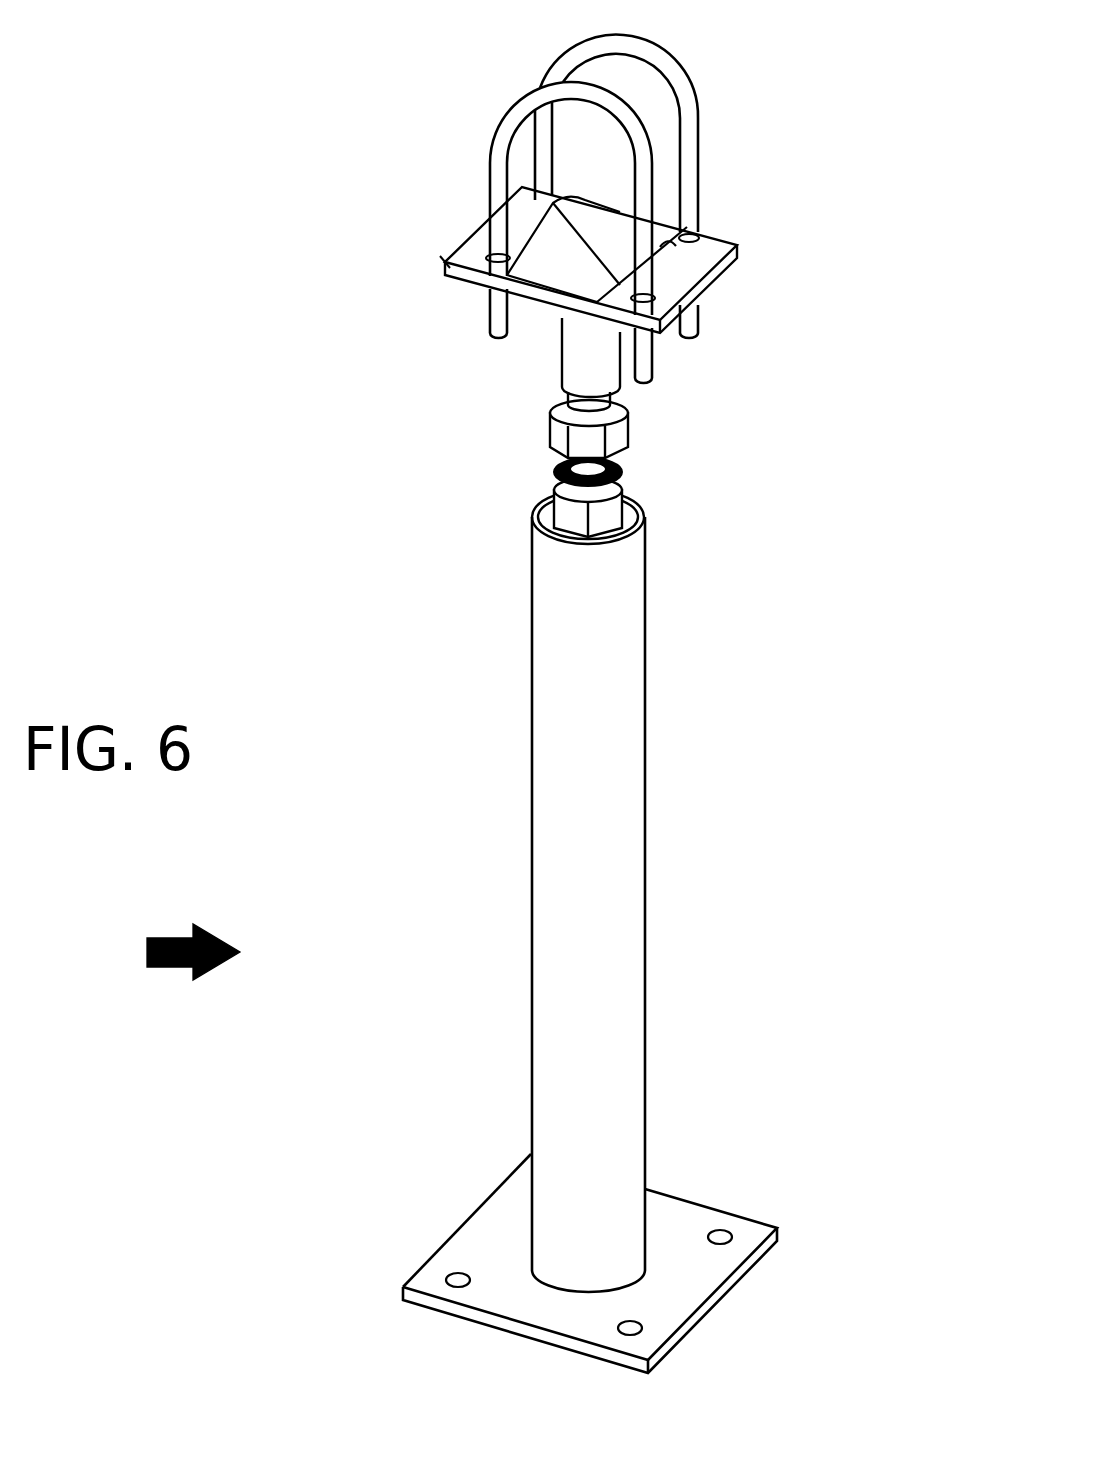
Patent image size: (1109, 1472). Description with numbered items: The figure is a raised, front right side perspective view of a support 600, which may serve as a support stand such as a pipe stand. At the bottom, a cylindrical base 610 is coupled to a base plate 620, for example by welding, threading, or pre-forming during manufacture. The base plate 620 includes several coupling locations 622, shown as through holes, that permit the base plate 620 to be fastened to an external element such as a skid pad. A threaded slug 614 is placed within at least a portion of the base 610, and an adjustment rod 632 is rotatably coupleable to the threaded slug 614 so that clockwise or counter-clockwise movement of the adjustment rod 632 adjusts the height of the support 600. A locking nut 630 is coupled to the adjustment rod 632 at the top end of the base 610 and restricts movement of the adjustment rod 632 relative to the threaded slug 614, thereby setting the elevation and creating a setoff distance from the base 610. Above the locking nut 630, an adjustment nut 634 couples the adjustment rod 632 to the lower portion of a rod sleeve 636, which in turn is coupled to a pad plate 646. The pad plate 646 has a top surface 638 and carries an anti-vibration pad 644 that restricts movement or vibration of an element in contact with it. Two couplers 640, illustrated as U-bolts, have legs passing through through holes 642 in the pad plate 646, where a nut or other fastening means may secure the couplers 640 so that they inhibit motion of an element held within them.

The support 600 is at (160, 952).
The base 610 is at (598, 692).
The threaded slug 614 is at (645, 533).
The base plate 620 is at (678, 1235).
The coupling location 622 is at (455, 1280).
The locking nut 630 is at (603, 508).
The adjustment rod 632 is at (625, 462).
The adjustment nut 634 is at (617, 432).
The rod sleeve 636 is at (583, 370).
The top surface 638 is at (672, 285).
The coupler 640 is at (667, 80).
The through hole 642 is at (680, 247).
The pad 644 is at (600, 217).
The pad plate 646 is at (447, 262).